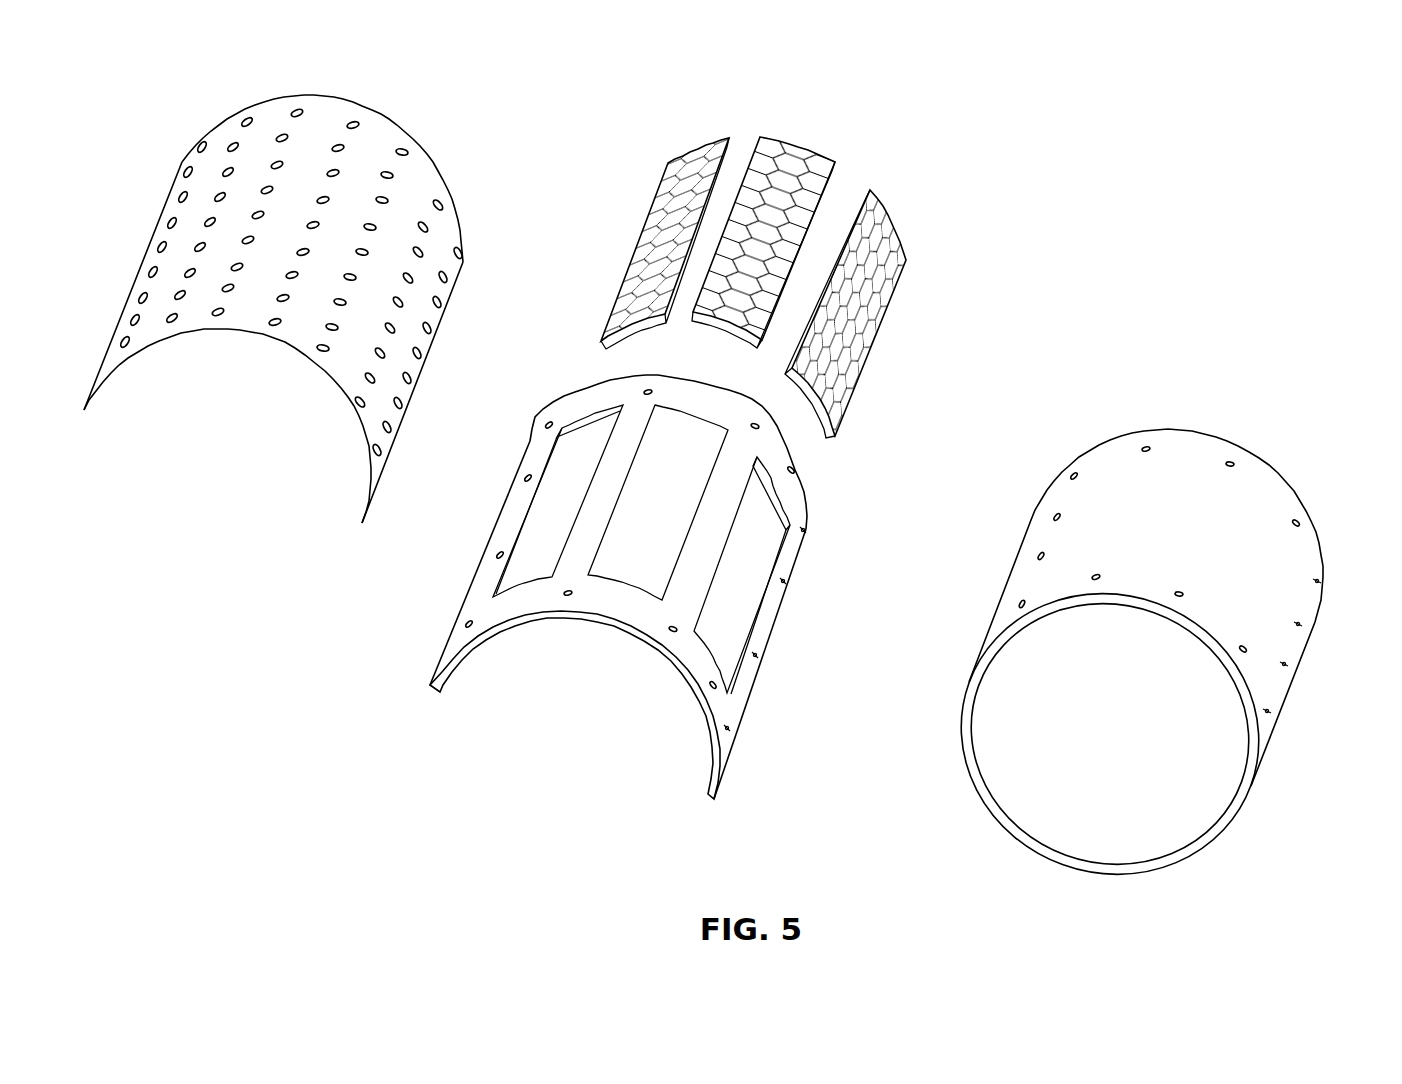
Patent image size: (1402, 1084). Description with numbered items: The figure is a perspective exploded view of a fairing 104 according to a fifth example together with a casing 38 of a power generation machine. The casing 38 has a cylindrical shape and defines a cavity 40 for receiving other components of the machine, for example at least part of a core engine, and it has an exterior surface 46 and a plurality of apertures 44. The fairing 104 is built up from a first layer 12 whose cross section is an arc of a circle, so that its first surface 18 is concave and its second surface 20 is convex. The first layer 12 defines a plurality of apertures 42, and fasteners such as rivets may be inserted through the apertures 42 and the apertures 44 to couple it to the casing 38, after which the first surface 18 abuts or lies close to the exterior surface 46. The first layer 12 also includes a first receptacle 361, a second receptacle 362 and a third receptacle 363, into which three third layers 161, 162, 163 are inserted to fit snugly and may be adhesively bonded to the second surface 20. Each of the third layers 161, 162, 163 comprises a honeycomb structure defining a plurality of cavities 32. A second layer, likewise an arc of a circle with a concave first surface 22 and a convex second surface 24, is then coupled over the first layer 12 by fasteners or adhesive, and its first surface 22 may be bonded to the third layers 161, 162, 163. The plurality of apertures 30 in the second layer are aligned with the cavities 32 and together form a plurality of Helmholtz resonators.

The fairing 104 is at (1042, 178).
The first layer 12 is at (636, 619).
The third layer 161 is at (706, 143).
The third layer 162 is at (812, 153).
The third layer 163 is at (897, 222).
The first surface 18 is at (606, 629).
The second surface 20 is at (471, 605).
The first surface 22 is at (187, 332).
The second surface 24 is at (269, 289).
The apertures 30 is at (188, 172).
The cavities 32 is at (787, 161).
The first receptacle 361 is at (547, 536).
The second receptacle 362 is at (690, 518).
The third receptacle 363 is at (769, 599).
The casing 38 is at (1159, 629).
The cavity 40 is at (1130, 757).
The apertures 42 is at (730, 729).
The apertures 44 is at (1272, 712).
The exterior surface 46 is at (1193, 550).